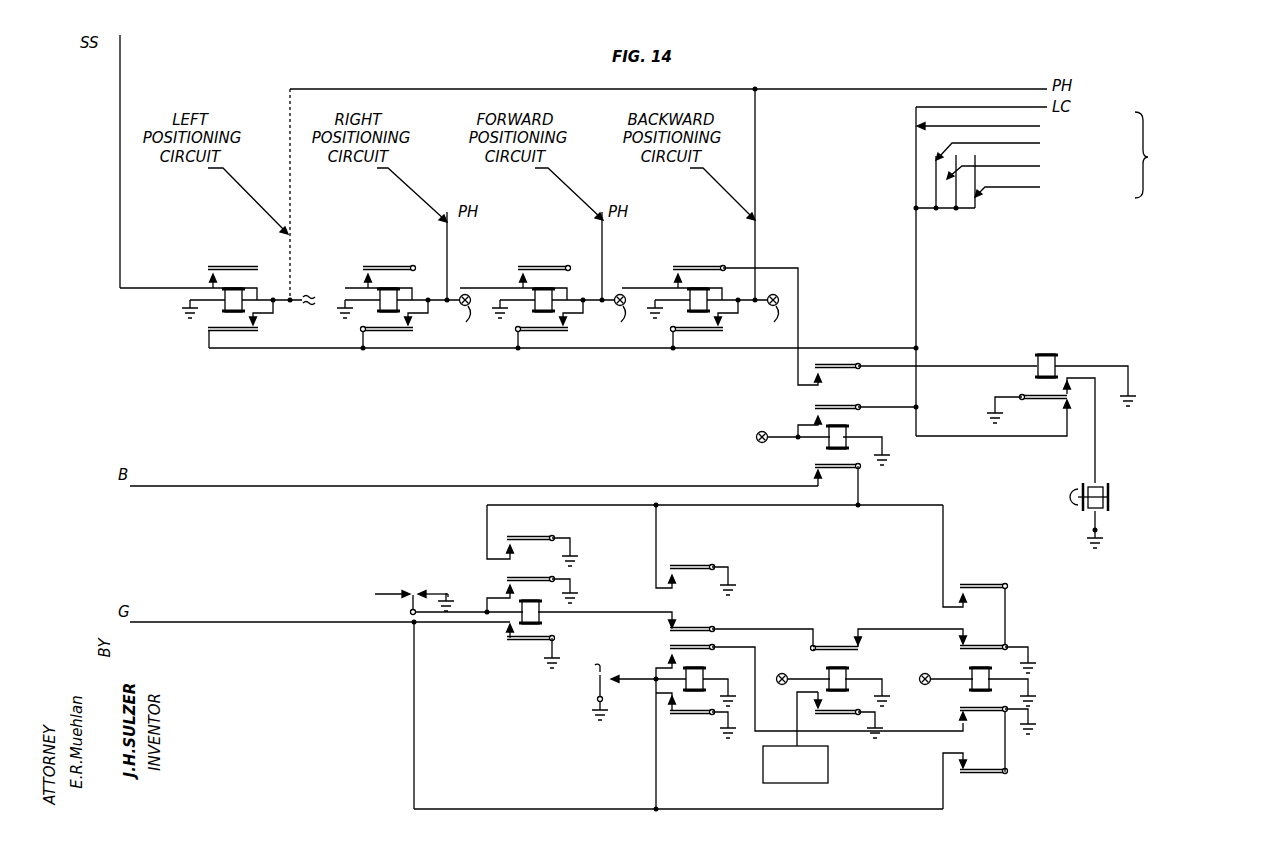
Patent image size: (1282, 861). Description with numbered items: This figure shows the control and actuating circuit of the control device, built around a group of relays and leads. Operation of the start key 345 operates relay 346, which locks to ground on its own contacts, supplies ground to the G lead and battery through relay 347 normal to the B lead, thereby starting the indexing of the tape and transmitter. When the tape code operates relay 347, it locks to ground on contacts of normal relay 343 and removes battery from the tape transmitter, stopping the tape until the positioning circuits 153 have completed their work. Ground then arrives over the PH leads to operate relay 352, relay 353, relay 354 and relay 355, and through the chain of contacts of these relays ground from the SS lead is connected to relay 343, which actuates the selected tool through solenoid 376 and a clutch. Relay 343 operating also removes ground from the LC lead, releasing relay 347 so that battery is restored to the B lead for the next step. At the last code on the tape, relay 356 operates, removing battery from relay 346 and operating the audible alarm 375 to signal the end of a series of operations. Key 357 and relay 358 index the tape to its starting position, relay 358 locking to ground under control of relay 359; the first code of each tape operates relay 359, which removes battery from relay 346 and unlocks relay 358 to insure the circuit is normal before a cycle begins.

The relay 352 is at (226, 310).
The relay 353 is at (381, 310).
The relay 354 is at (536, 310).
The relay 355 is at (691, 310).
The positioning circuits 153 is at (1055, 289).
The relay 343 is at (1042, 354).
The solenoid 376 is at (1118, 499).
The relay 347 is at (845, 441).
The start key 345 is at (430, 582).
The relay 346 is at (540, 614).
The key 357 is at (645, 658).
The relay 358 is at (702, 684).
The relay 356 is at (846, 680).
The audible alarm 375 is at (828, 770).
The relay 359 is at (975, 678).